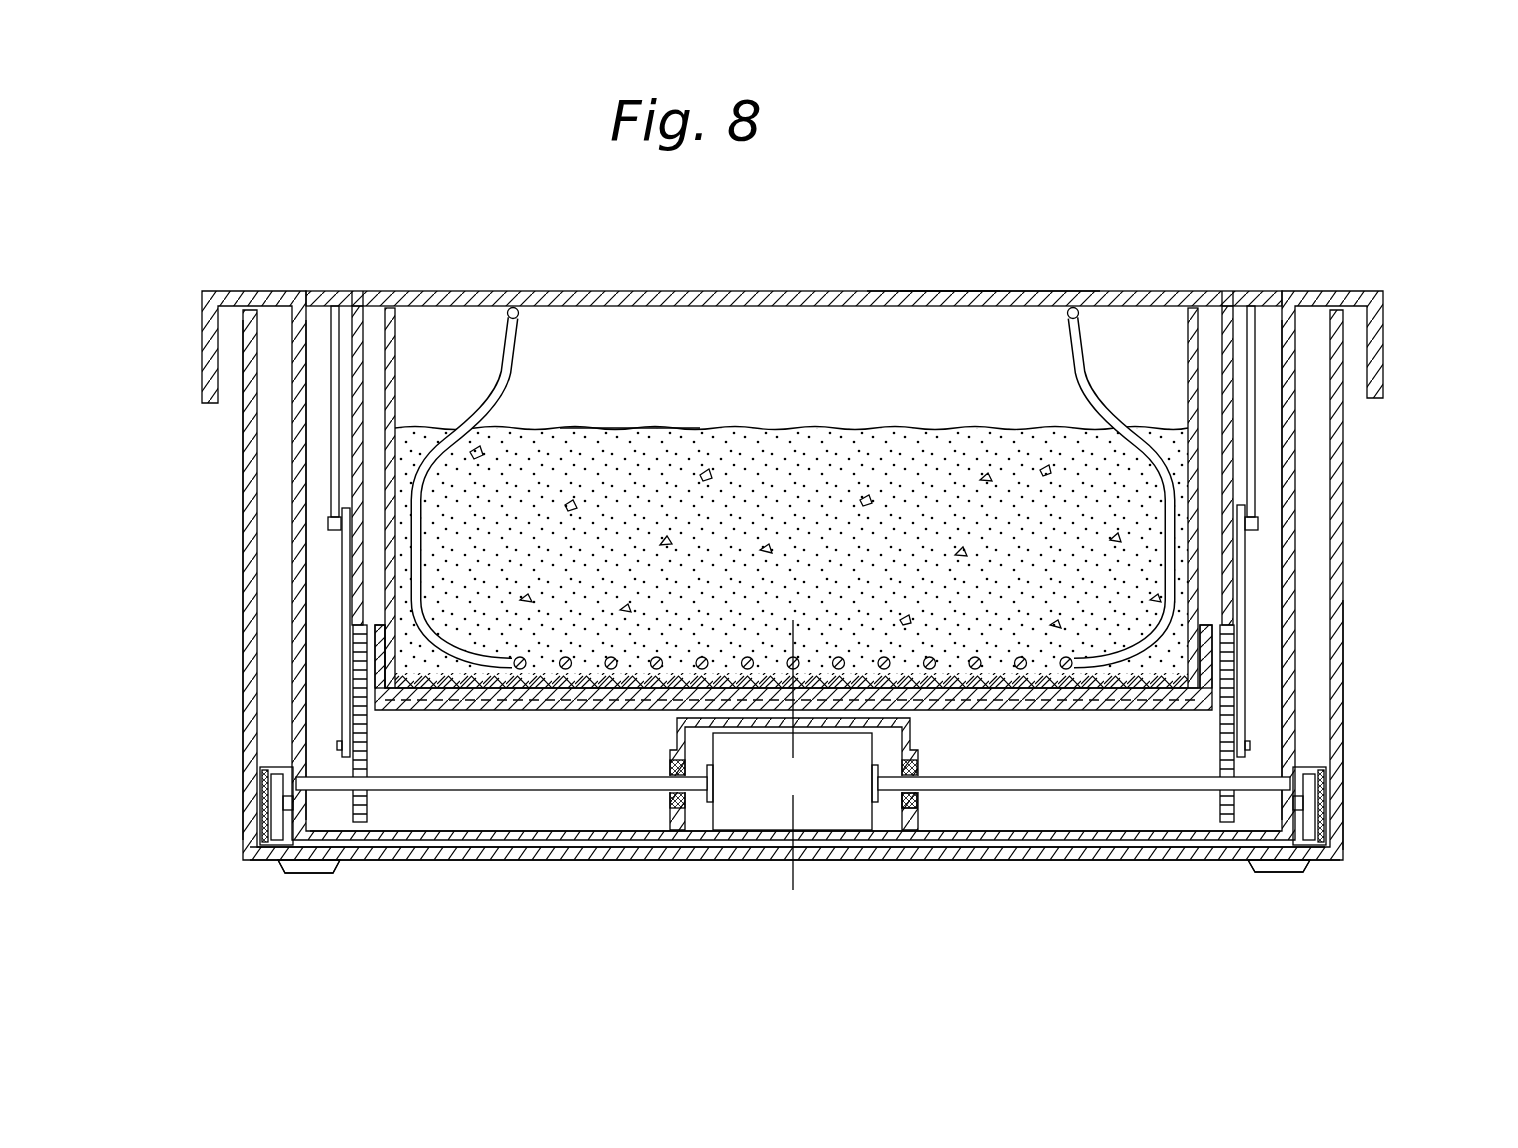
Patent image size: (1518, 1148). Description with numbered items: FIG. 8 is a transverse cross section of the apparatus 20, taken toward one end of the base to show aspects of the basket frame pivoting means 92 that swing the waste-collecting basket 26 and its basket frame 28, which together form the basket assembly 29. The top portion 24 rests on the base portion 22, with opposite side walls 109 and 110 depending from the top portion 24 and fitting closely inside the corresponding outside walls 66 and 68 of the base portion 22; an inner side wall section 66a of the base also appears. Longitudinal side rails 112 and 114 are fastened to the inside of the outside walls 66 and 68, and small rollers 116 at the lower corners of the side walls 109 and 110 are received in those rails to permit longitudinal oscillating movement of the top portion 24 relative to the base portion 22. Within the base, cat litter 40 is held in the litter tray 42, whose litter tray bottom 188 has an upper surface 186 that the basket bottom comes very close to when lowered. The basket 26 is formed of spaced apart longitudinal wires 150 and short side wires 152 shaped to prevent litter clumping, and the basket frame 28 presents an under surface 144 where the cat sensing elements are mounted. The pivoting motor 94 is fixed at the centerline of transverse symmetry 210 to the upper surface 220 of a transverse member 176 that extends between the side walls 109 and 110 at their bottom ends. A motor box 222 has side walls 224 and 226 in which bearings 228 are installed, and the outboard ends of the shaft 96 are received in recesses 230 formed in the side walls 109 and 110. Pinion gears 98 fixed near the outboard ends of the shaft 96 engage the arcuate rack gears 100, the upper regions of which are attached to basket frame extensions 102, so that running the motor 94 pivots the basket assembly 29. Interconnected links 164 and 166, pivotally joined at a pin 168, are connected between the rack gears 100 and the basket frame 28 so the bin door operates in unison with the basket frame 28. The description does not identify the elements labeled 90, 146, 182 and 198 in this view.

The apparatus 20 is at (867, 203).
The base portion 22 is at (1362, 672).
The top portion 24 is at (1352, 280).
The waste-collecting basket 26 is at (530, 345).
The basket frame 28 is at (446, 275).
The basket assembly 29 is at (930, 238).
The litter 40 is at (915, 420).
The litter tray 42 is at (400, 357).
The outside wall 66 is at (1345, 470).
The inner side wall section 66a is at (1295, 718).
The outside wall 68 is at (243, 536).
The bottom plate 90 is at (595, 713).
The basket assembly pivoting means 92 is at (745, 838).
The electric motor 94 is at (870, 822).
The shaft 96 is at (505, 800).
The pinion gears 98 is at (370, 765).
The arcuate rack gears 100 is at (348, 580).
The basket frame extensions 102 is at (360, 290).
The side wall 109 is at (1295, 600).
The side wall 110 is at (292, 488).
The longitudinal side rail 112 is at (1326, 770).
The longitudinal side rail 114 is at (268, 780).
The rollers 116 is at (270, 800).
The under surface 144 is at (1190, 452).
The tube bend 146 is at (397, 392).
The longitudinal wires 150 is at (747, 660).
The side wires 152 is at (448, 625).
The link 164 is at (338, 718).
The link 166 is at (331, 460).
The pin 168 is at (332, 522).
The transverse member 176 is at (1165, 858).
The base plate 182 is at (615, 858).
The upper surface 186 is at (1148, 680).
The litter tray bottom 188 is at (532, 700).
The media surface 198 is at (688, 430).
The centerline of transverse symmetry 210 is at (795, 815).
The upper surface 220 is at (1095, 838).
The motor box 222 is at (912, 748).
The side wall 224 is at (925, 812).
The side wall 226 is at (677, 738).
The bearings 228 is at (670, 790).
The recesses 230 is at (342, 812).